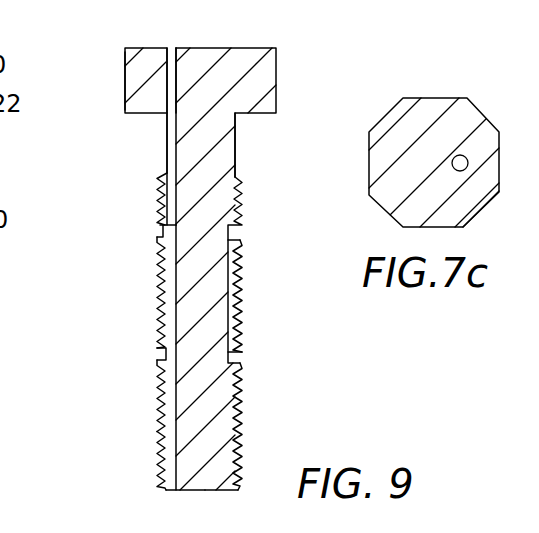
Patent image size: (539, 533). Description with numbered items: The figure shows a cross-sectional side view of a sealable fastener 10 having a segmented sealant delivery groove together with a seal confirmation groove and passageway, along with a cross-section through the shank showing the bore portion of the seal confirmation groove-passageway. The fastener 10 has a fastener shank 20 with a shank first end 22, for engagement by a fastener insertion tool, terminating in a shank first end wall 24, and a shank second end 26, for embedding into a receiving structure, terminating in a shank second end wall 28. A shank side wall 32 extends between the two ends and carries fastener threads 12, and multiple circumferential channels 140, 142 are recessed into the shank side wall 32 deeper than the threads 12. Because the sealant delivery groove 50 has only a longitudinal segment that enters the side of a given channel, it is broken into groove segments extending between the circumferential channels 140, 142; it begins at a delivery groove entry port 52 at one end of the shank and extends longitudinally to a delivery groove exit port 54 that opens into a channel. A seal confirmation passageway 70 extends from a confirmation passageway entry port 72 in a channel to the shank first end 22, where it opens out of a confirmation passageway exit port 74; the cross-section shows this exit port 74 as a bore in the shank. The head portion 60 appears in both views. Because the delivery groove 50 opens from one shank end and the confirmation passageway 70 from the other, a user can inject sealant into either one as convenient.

In FIG. 9, the sealable fastener 10 is at (98, 283).
In FIG. 9, the fastener threads 12 is at (240, 420).
In FIG. 9, the fastener shank 20 is at (235, 160).
In FIG. 9, the shank first end 22 is at (128, 100).
In FIG. 9, the shank first end wall 24 is at (274, 49).
In FIG. 9, the shank second end 26 is at (160, 463).
In FIG. 9, the shank second end wall 28 is at (205, 492).
In FIG. 9, the shank side wall 32 is at (242, 298).
In FIG. 9, the sealant delivery groove 50 is at (232, 320).
In FIG. 9, the delivery groove entry port 52 is at (168, 492).
In FIG. 9, the delivery groove exit port 54 is at (165, 225).
In FIG. 9, the head portion 60 is at (127, 82).
In FIG. 7C, the head portion 60 is at (372, 163).
In FIG. 9, the seal confirmation passageway 70 is at (170, 78).
In FIG. 9, the confirmation passageway entry port 72 is at (167, 223).
In FIG. 9, the confirmation passageway exit port 74 is at (177, 46).
In FIG. 7C, the confirmation passageway exit port 74 is at (460, 155).
In FIG. 9, the circumferential channel 140 is at (231, 228).
In FIG. 9, the circumferential channel 142 is at (232, 353).